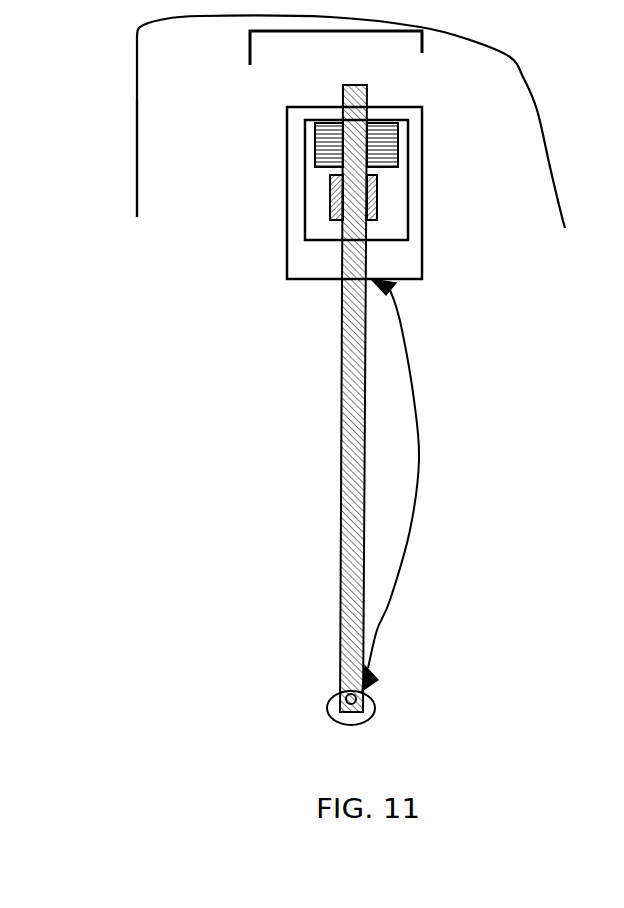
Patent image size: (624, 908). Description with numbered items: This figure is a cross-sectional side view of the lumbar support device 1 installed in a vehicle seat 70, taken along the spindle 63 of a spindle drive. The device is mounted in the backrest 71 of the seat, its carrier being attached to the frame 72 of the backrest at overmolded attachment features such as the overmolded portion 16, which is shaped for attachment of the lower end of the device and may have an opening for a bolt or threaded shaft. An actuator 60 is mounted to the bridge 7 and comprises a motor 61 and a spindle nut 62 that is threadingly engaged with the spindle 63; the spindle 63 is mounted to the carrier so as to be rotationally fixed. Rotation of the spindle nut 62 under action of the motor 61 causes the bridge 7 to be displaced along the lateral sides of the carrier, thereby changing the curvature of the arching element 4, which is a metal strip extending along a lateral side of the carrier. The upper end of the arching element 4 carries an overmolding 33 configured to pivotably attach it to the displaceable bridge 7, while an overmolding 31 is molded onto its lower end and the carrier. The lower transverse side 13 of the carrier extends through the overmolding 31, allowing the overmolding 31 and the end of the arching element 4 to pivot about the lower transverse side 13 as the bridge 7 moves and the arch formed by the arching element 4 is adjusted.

The vehicle seat 70 is at (78, 56).
The backrest 71 is at (138, 110).
The frame 72 is at (248, 40).
The lumbar support device 1 is at (222, 130).
The bridge 7 is at (287, 122).
The actuator 60 is at (392, 117).
The motor 61 is at (388, 170).
The spindle nut 62 is at (330, 203).
The spindle 63 is at (342, 411).
The overmolding 33 is at (394, 286).
The arching element 4 is at (407, 557).
The overmolding 31 is at (376, 680).
The lower transverse side 13 is at (343, 711).
The overmolded portion 16 is at (368, 718).